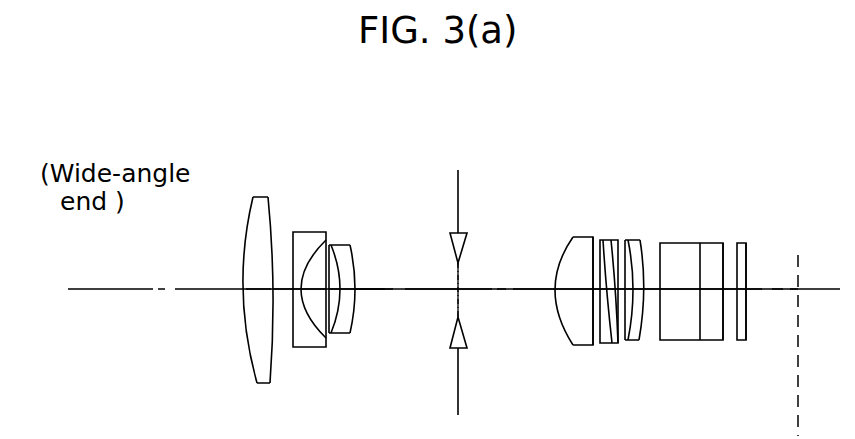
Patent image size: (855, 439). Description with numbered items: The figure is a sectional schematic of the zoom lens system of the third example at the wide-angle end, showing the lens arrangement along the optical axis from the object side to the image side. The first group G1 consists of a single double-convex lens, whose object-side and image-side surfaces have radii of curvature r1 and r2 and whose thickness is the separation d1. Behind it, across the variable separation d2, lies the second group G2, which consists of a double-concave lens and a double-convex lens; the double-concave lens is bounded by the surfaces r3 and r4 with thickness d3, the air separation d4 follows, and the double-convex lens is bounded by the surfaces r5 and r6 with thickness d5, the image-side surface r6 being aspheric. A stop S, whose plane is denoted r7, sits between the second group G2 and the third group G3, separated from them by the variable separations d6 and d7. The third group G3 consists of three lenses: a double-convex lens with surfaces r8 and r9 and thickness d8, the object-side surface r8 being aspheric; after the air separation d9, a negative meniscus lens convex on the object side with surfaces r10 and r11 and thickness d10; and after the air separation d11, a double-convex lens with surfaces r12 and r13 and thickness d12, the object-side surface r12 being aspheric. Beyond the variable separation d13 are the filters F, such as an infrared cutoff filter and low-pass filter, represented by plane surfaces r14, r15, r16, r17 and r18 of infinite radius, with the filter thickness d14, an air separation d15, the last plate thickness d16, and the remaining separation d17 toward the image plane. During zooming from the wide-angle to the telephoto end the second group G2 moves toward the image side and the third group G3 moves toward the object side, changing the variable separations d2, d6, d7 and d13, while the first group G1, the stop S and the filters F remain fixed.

The first group G1 is at (280, 147).
The second group G2 is at (355, 147).
The stop S is at (468, 145).
The third group G3 is at (648, 147).
The filters F is at (752, 147).
The radius of curvature of the first lens surface r1 is at (250, 207).
The radius of curvature of the second lens surface r2 is at (271, 208).
The radius of curvature of the third lens surface r3 is at (296, 252).
The radius of curvature of the fourth lens surface r4 is at (325, 250).
The radius of curvature of the fifth lens surface r5 is at (330, 254).
The radius of curvature of the sixth lens surface r6 is at (347, 253).
The stop surface r7 is at (457, 273).
The radius of curvature of the eighth lens surface r8 is at (570, 242).
The radius of curvature of the ninth lens surface r9 is at (591, 240).
The radius of curvature of the tenth lens surface r10 is at (605, 243).
The radius of curvature of the eleventh lens surface r11 is at (608, 246).
The radius of curvature of the twelfth lens surface r12 is at (627, 248).
The radius of curvature of the thirteenth lens surface r13 is at (645, 243).
The radius of curvature of the fourteenth surface r14 is at (662, 245).
The radius of curvature of the fifteenth surface r15 is at (696, 246).
The radius of curvature of the sixteenth surface r16 is at (723, 258).
The radius of curvature of the seventeenth surface r17 is at (737, 255).
The radius of curvature of the eighteenth surface r18 is at (747, 257).
The separation between the first and second lens surfaces d1 is at (257, 292).
The separation between the second and third lens surfaces d2 is at (283, 292).
The separation between the third and fourth lens surfaces d3 is at (305, 292).
The separation between the fourth and fifth lens surfaces d4 is at (333, 292).
The separation between the fifth and sixth lens surfaces d5 is at (345, 292).
The separation between the sixth surface and the stop d6 is at (393, 292).
The separation between the stop and the eighth surface d7 is at (515, 292).
The separation between the eighth and ninth lens surfaces d8 is at (573, 292).
The separation between the ninth and tenth lens surfaces d9 is at (597, 292).
The separation between the tenth and eleventh lens surfaces d10 is at (609, 292).
The separation between the eleventh and twelfth lens surfaces d11 is at (622, 292).
The separation between the twelfth and thirteenth lens surfaces d12 is at (635, 292).
The separation between the thirteenth and fourteenth surfaces d13 is at (653, 292).
The separation between the fourteenth and fifteenth surfaces d14 is at (684, 292).
The separation between the sixteenth and seventeenth surfaces d15 is at (711, 292).
The separation between the seventeenth and eighteenth surfaces d16 is at (731, 292).
The axial thickness d17 is at (744, 292).